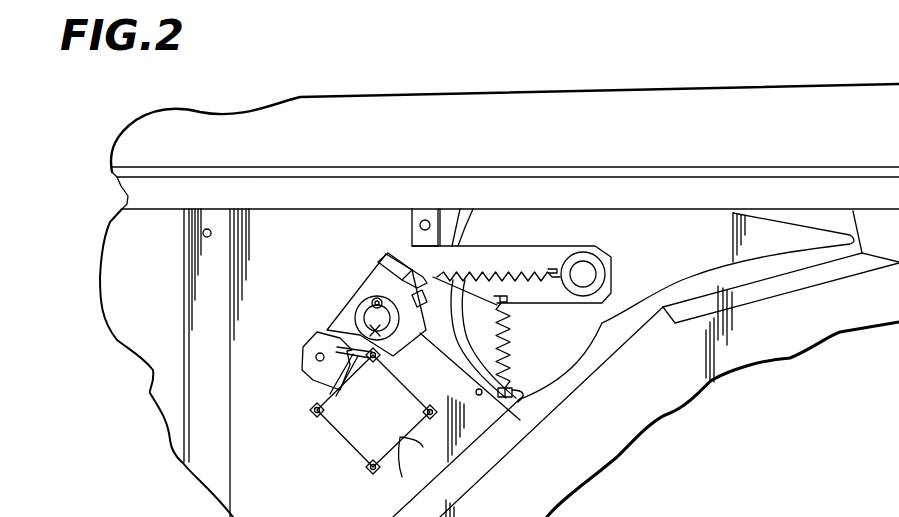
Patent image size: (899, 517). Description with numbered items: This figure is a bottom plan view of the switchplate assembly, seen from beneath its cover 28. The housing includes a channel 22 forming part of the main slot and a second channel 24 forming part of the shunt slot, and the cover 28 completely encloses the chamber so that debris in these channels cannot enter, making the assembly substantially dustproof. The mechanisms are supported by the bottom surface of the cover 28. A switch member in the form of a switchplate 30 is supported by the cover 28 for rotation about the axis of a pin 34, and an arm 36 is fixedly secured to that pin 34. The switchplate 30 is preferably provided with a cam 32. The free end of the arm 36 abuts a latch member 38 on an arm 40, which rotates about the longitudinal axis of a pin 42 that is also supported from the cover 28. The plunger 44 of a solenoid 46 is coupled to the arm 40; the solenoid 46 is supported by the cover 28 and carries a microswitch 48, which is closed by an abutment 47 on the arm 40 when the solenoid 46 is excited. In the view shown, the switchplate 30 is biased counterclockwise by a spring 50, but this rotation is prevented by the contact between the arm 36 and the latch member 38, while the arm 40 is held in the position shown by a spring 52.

The channel 22 is at (361, 177).
The switchplate 30 is at (622, 211).
The cover 28 is at (300, 487).
The arm 36 is at (572, 234).
The pin 34 is at (586, 275).
The spring 52 is at (478, 275).
The spring 50 is at (505, 355).
The latch member 38 is at (387, 259).
The arm 40 is at (346, 322).
The pin 42 is at (371, 305).
The abutment 47 is at (325, 334).
The plunger 44 is at (316, 362).
The microswitch 48 is at (325, 388).
The solenoid 46 is at (398, 426).
The second channel 24 is at (470, 463).
The cam 32 is at (568, 362).